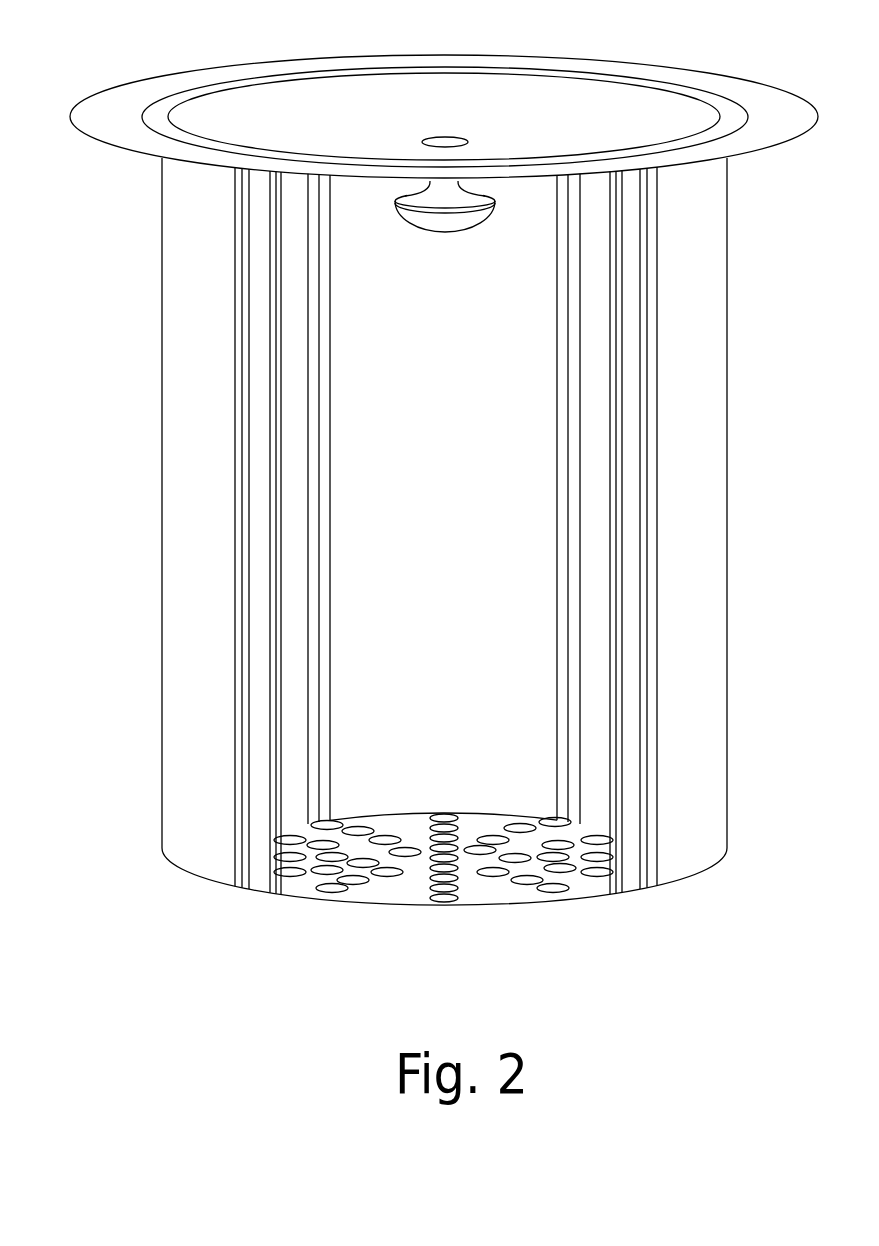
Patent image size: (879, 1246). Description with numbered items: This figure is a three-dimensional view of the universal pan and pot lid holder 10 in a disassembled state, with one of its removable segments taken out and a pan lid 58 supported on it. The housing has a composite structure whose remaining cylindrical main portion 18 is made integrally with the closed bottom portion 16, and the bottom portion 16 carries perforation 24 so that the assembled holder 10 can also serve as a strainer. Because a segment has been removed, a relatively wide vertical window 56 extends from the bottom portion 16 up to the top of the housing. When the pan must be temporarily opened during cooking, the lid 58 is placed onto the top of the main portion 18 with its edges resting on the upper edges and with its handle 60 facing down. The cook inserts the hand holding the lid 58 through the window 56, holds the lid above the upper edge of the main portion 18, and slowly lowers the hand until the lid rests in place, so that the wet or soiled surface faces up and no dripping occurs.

The holder 10 is at (126, 372).
The lid 58 is at (632, 123).
The handle 60 is at (437, 218).
The main portion 18 is at (695, 625).
The vertical window 56 is at (412, 626).
The bottom portion 16 is at (392, 890).
The perforation 24 is at (603, 873).